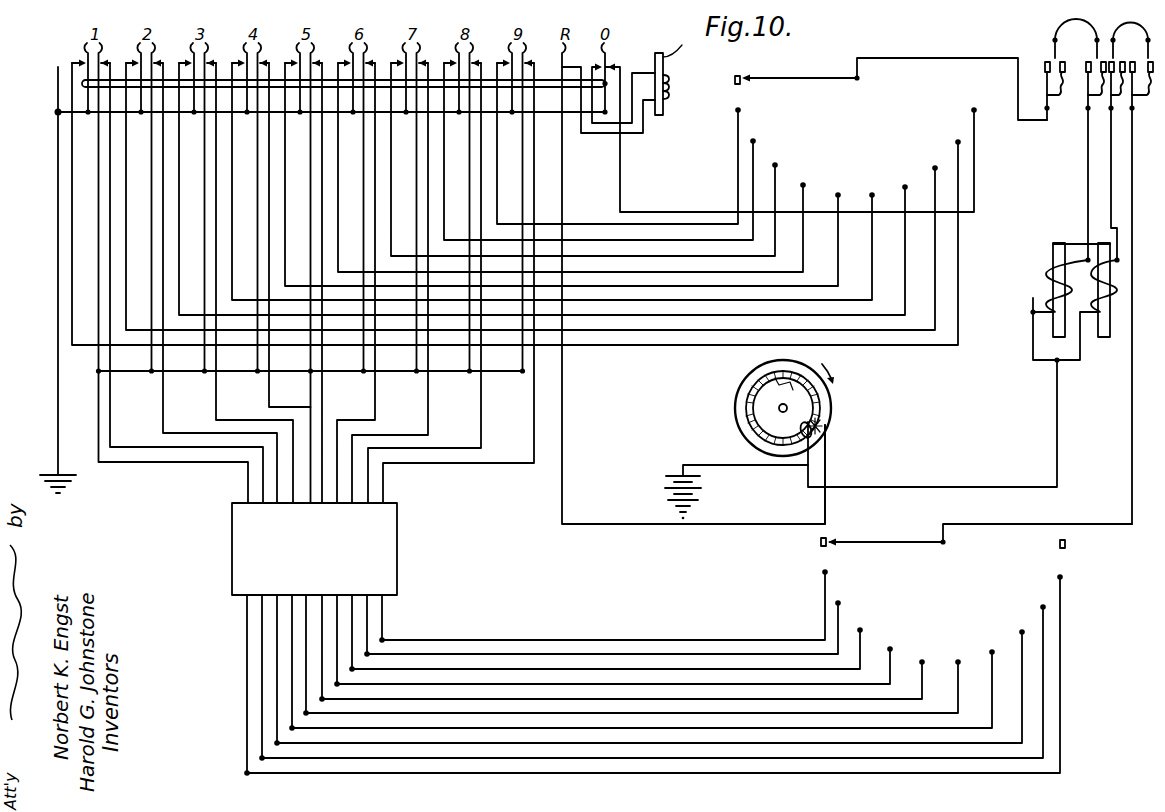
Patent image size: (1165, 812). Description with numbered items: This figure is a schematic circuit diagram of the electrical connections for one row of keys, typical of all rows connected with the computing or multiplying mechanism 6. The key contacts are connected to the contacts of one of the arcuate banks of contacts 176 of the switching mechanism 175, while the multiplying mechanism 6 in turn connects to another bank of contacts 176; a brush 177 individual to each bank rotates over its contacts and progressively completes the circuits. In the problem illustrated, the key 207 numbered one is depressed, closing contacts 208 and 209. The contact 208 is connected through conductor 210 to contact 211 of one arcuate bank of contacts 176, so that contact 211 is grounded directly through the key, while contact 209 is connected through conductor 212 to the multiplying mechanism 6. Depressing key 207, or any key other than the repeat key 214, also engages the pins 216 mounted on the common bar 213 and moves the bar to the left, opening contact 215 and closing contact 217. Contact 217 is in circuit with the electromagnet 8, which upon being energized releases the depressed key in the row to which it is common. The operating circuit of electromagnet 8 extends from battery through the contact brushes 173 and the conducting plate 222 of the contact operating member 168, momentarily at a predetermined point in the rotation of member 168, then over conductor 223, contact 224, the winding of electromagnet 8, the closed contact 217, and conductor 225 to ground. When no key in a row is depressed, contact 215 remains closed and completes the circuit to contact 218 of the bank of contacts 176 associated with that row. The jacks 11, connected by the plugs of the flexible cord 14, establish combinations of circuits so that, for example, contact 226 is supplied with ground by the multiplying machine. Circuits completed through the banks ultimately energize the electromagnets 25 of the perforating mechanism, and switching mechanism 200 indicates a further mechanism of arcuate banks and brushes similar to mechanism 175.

The computing or multiplying mechanism 6 is at (398, 530).
The electromagnet 8 is at (678, 41).
The jacks 11 is at (1063, 62).
The flexible cord 14 is at (1128, 22).
The electromagnets 25 is at (1053, 246).
The contact operating member 168 is at (770, 408).
The contact brushes 173 is at (820, 424).
The switching mechanism 175 is at (882, 110).
The arcuate banks of contacts 176 is at (825, 190).
The brush 177 is at (790, 77).
The switching mechanism rectangle 200 is at (1067, 633).
The key 207 is at (86, 40).
The contact 208 is at (72, 63).
The contact 209 is at (112, 61).
The conductor 210 is at (612, 347).
The contact 211 is at (961, 145).
The conductor 212 is at (137, 449).
The bar 213 is at (436, 80).
The repeat key 214 is at (575, 50).
The contact 215 is at (627, 68).
The pins 216 is at (348, 80).
The contact 217 is at (594, 65).
The contact 218 is at (976, 113).
The conducting plate 222 is at (758, 380).
The conductor 223 is at (563, 398).
The contact 224 is at (569, 70).
The conductor 225 is at (127, 120).
The contact 226 is at (1040, 606).